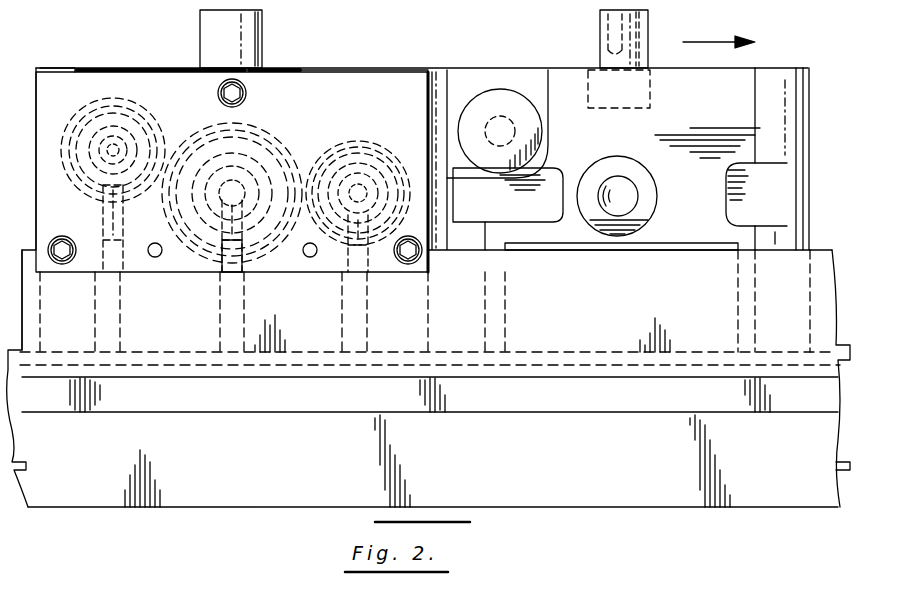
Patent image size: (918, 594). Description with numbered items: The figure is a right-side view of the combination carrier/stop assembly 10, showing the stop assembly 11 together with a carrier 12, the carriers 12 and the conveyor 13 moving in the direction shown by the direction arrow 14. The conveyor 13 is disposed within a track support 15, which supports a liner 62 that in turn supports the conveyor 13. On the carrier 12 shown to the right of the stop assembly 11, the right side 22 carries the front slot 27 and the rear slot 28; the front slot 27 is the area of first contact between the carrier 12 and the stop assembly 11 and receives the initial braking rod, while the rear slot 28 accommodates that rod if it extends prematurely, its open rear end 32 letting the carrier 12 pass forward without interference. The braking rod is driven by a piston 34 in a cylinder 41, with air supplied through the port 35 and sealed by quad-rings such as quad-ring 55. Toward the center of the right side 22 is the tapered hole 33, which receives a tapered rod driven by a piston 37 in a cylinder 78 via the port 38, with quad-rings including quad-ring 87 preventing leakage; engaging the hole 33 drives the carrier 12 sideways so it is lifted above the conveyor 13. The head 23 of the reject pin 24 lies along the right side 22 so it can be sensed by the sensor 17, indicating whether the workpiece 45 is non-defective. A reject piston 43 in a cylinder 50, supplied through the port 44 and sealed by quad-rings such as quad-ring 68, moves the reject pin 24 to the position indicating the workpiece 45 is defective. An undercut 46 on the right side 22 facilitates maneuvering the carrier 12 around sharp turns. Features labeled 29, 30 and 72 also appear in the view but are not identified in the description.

The combination carrier/stop assembly 10 is at (436, 48).
The stop assembly 11 is at (30, 70).
The carrier 12 is at (762, 66).
The conveyor 13 is at (832, 352).
The direction arrow 14 is at (714, 42).
The track support 15 is at (678, 510).
The sensor 17 is at (180, 67).
The right side of the carrier 22 is at (570, 76).
The head of the reject pin 23 is at (146, 106).
The reject pin 24 is at (505, 88).
The front slot 27 is at (740, 198).
The rear slot 28 is at (550, 172).
The tape guide surface 29 is at (638, 108).
The top rail 30 is at (318, 67).
The rear end of the rear slot 32 is at (447, 205).
The hole 33 is at (620, 202).
The piston 34 is at (352, 140).
The port 35 is at (364, 276).
The piston 37 is at (250, 128).
The port 38 is at (226, 276).
The cylinder 41 is at (330, 160).
The reject piston 43 is at (90, 106).
The port 44 is at (118, 274).
The workpiece 45 is at (262, 30).
The undercut 46 is at (646, 252).
The cylinder 50 is at (88, 206).
The quad-ring 55 is at (392, 165).
The liner 62 is at (838, 434).
The quad-ring 68 is at (120, 110).
The end wall 72 is at (811, 92).
The cylinder 78 is at (266, 142).
The quad-ring 87 is at (265, 276).